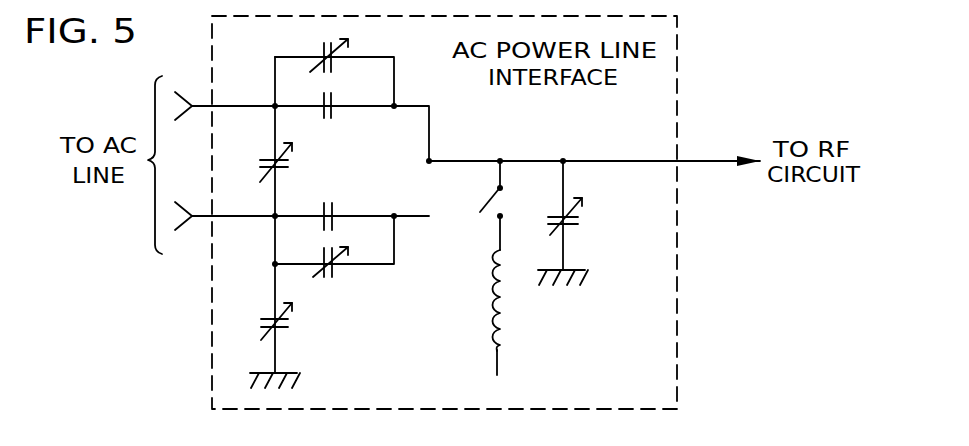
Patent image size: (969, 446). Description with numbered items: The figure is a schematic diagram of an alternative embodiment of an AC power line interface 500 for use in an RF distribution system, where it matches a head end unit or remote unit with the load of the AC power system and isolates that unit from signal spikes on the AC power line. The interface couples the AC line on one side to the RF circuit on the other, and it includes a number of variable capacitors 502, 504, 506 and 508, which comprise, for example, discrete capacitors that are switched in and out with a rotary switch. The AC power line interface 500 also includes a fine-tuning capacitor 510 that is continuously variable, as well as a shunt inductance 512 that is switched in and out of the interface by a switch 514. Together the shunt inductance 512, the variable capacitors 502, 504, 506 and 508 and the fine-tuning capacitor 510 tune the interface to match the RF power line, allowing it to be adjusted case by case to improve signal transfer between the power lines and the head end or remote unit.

The AC power line interface 500 is at (677, 100).
The variable capacitor 502 is at (296, 323).
The variable capacitor 504 is at (330, 284).
The variable capacitor 506 is at (296, 163).
The variable capacitor 508 is at (320, 50).
The fine-tuning capacitor 510 is at (574, 228).
The shunt inductance 512 is at (505, 318).
The switch 514 is at (487, 215).